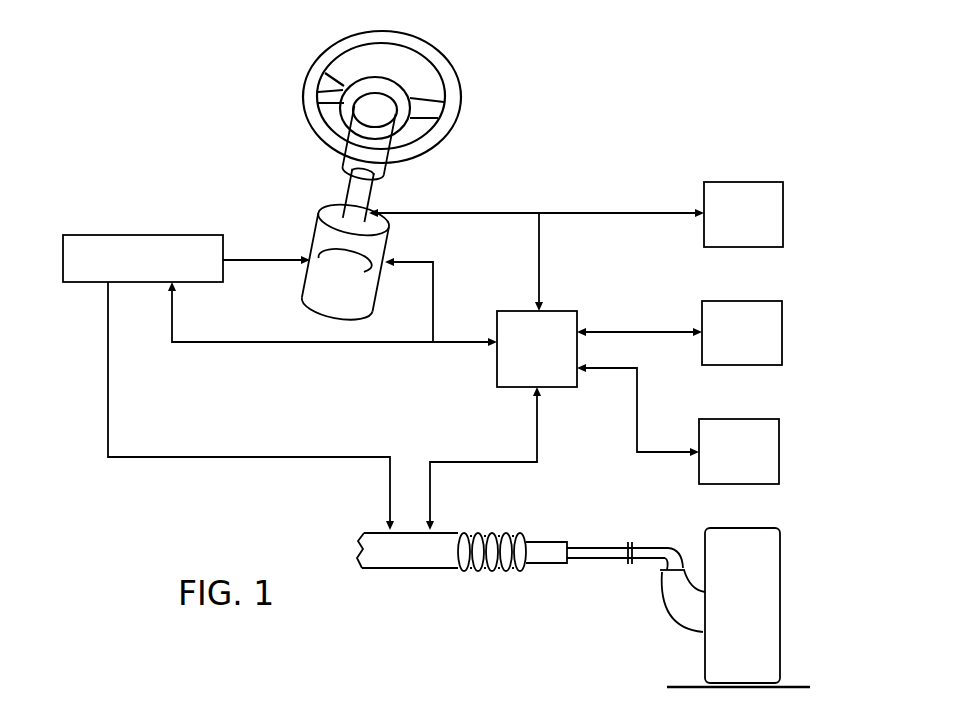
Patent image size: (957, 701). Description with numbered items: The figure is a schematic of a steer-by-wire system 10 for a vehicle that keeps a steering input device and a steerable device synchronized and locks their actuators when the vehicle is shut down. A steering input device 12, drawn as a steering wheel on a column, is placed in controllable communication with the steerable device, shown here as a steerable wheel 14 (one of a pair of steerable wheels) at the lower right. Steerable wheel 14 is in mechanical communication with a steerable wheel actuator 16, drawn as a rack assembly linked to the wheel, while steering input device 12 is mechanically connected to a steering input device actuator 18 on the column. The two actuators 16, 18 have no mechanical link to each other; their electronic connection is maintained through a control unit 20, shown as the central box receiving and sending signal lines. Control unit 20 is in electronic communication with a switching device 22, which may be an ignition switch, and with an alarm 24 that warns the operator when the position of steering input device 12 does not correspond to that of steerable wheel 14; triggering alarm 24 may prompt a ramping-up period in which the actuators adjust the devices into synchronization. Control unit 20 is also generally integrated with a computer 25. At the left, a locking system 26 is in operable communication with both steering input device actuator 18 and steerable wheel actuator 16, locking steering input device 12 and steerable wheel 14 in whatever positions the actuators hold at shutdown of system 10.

The system 10 is at (197, 78).
The steering input device 12 is at (433, 62).
The steerable wheels 14 is at (755, 526).
The steerable wheel actuator 16 is at (407, 570).
The steering input device actuator 18 is at (312, 240).
The control unit 20 is at (560, 310).
The switching device 22 is at (767, 182).
The alarm 24 is at (763, 418).
The computer 25 is at (763, 299).
The locking system 26 is at (137, 232).